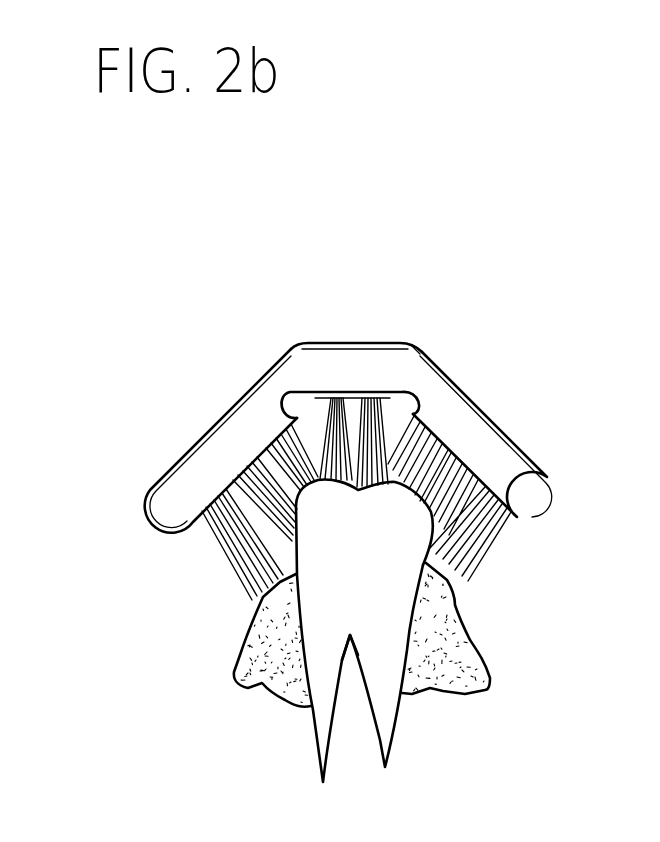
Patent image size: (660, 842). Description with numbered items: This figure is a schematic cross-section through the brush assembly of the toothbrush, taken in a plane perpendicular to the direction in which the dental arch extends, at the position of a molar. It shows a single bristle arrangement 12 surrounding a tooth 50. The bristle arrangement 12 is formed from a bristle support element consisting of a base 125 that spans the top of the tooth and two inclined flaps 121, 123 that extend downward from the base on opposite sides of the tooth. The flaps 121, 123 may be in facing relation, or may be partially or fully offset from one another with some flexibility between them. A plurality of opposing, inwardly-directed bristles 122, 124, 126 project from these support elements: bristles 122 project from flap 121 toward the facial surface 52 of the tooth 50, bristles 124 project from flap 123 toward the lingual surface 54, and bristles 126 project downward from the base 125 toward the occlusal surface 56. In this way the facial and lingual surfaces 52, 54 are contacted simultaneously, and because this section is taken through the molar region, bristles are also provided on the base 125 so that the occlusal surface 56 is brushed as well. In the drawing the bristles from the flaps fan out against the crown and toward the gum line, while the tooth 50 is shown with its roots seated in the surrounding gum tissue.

The bristle arrangement 12 is at (349, 432).
The inclined flap 121 is at (187, 480).
The bristles 122 is at (207, 530).
The inclined flap 123 is at (483, 448).
The bristles 124 is at (490, 520).
The base 125 is at (354, 340).
The bristles 126 is at (424, 350).
The tooth 50 is at (424, 631).
The facial surface 52 is at (297, 527).
The lingual surface 54 is at (420, 555).
The occlusal surface 56 is at (362, 489).